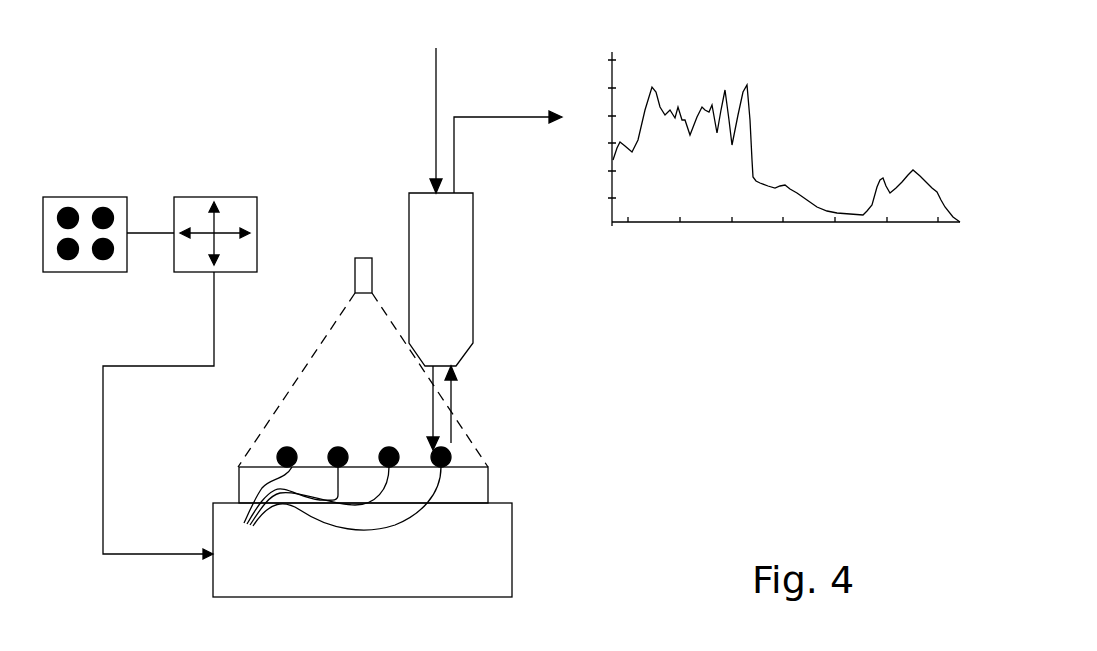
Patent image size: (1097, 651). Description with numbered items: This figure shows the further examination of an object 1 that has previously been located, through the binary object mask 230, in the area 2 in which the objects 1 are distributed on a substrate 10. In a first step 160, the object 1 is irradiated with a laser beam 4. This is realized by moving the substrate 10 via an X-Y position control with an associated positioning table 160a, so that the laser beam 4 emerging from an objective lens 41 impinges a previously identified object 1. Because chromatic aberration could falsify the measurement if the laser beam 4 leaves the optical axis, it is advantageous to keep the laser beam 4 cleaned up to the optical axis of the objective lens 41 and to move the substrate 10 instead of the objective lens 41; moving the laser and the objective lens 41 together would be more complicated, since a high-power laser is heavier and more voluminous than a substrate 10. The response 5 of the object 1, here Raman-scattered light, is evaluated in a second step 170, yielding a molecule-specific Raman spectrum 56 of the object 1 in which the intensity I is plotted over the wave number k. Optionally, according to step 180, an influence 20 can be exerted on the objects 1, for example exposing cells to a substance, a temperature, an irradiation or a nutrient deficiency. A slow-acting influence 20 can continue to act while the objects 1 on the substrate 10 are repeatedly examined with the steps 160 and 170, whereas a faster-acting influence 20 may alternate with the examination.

The object 1 is at (341, 510).
The area 2 is at (476, 452).
The laser beam 4 is at (436, 116).
The response 5 is at (451, 392).
The substrate 10 is at (488, 485).
The influence 20 is at (363, 258).
The objective lens 41 is at (473, 285).
The Raman spectrum 56 is at (757, 140).
The first step 160 is at (237, 197).
The positioning table 160a is at (512, 553).
The second step 170 is at (515, 117).
The step 180 is at (310, 358).
The binary object mask 230 is at (100, 197).